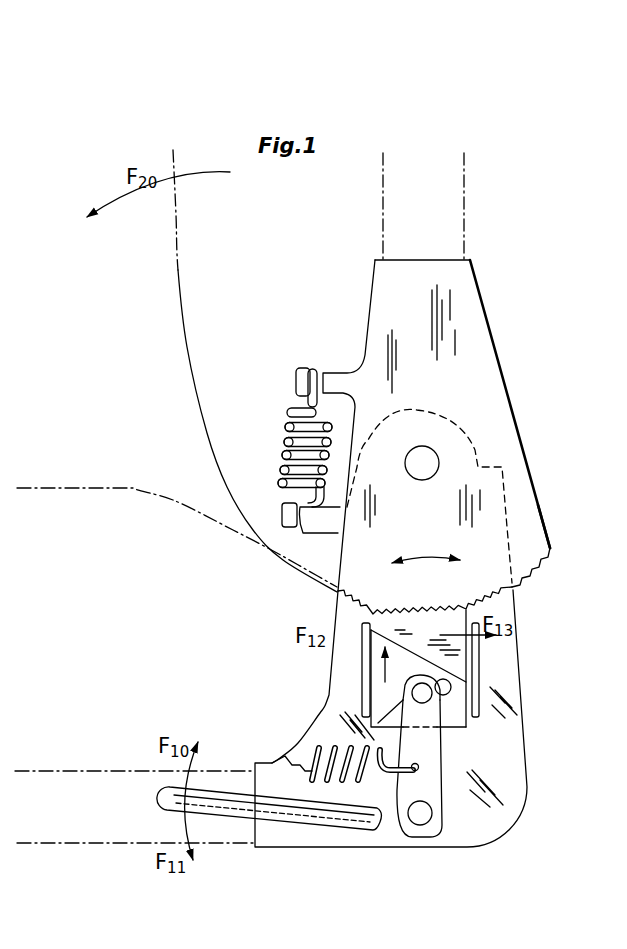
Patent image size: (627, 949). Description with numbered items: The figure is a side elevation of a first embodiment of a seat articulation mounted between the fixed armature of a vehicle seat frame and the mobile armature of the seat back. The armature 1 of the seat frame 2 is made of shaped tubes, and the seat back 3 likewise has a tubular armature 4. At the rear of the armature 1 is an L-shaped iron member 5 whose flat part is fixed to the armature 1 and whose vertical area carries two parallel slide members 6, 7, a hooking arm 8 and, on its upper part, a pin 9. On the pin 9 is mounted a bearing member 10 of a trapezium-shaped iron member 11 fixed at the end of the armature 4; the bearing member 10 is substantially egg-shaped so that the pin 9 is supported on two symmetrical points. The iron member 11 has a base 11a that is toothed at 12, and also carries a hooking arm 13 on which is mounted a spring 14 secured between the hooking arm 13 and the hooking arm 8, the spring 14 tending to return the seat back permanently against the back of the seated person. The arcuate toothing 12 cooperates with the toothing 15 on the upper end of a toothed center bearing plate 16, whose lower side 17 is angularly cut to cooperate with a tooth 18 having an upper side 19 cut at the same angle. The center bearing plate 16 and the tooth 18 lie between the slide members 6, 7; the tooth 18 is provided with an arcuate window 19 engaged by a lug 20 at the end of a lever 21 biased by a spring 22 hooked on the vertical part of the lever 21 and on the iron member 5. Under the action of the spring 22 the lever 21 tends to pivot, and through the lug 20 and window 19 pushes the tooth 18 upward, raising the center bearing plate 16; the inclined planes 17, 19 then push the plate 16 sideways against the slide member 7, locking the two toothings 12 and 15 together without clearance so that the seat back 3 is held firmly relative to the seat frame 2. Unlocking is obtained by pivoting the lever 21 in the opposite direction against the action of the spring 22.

The armature 1 is at (70, 778).
The seat frame 2 is at (98, 590).
The seat back 3 is at (265, 248).
The armature 4 is at (462, 190).
The L-shaped iron member 5 is at (517, 762).
The slide member 6 is at (362, 670).
The slide member 7 is at (480, 658).
The hooking arm 8 is at (310, 537).
The pin 9 is at (438, 445).
The bearing member 10 is at (422, 480).
The iron member 11 is at (476, 348).
The base 11a is at (533, 542).
The toothing 12 is at (540, 577).
The hooking arm 13 is at (332, 378).
The spring 14 is at (283, 442).
The toothing 15 is at (403, 616).
The toothed center bearing plate 16 is at (466, 668).
The lower side 17 is at (413, 648).
The tooth 18 is at (377, 692).
The upper side 19 is at (378, 723).
The lug 20 is at (440, 707).
The lever 21 is at (443, 787).
The spring 22 is at (317, 758).